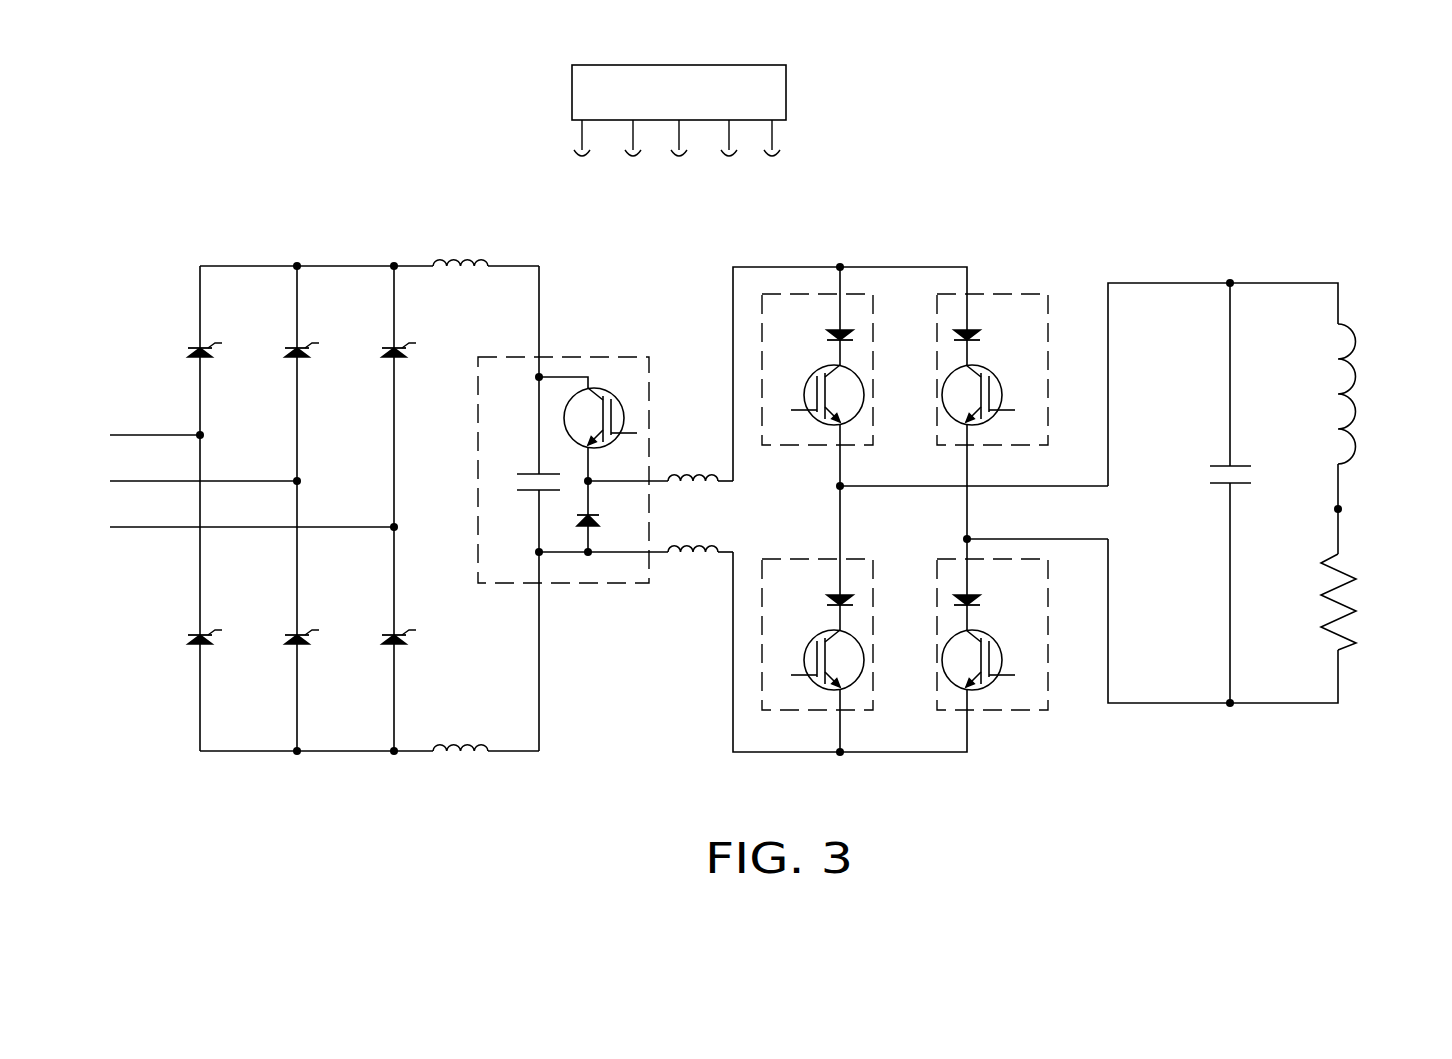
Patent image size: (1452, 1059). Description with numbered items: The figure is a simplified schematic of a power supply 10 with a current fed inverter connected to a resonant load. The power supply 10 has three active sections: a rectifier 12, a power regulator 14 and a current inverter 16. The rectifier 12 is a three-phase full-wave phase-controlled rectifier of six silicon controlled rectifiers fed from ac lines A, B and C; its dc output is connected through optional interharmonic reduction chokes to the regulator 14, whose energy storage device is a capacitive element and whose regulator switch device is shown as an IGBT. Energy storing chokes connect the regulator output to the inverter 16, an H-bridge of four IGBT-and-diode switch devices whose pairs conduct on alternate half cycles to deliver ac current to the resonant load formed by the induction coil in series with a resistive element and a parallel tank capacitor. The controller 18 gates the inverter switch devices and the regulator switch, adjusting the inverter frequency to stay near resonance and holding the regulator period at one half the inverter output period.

The power supply 10 is at (1100, 145).
The rectifier 12 is at (293, 225).
The power regulator 14 is at (593, 357).
The current inverter 16 is at (891, 226).
The controller 18 is at (772, 90).